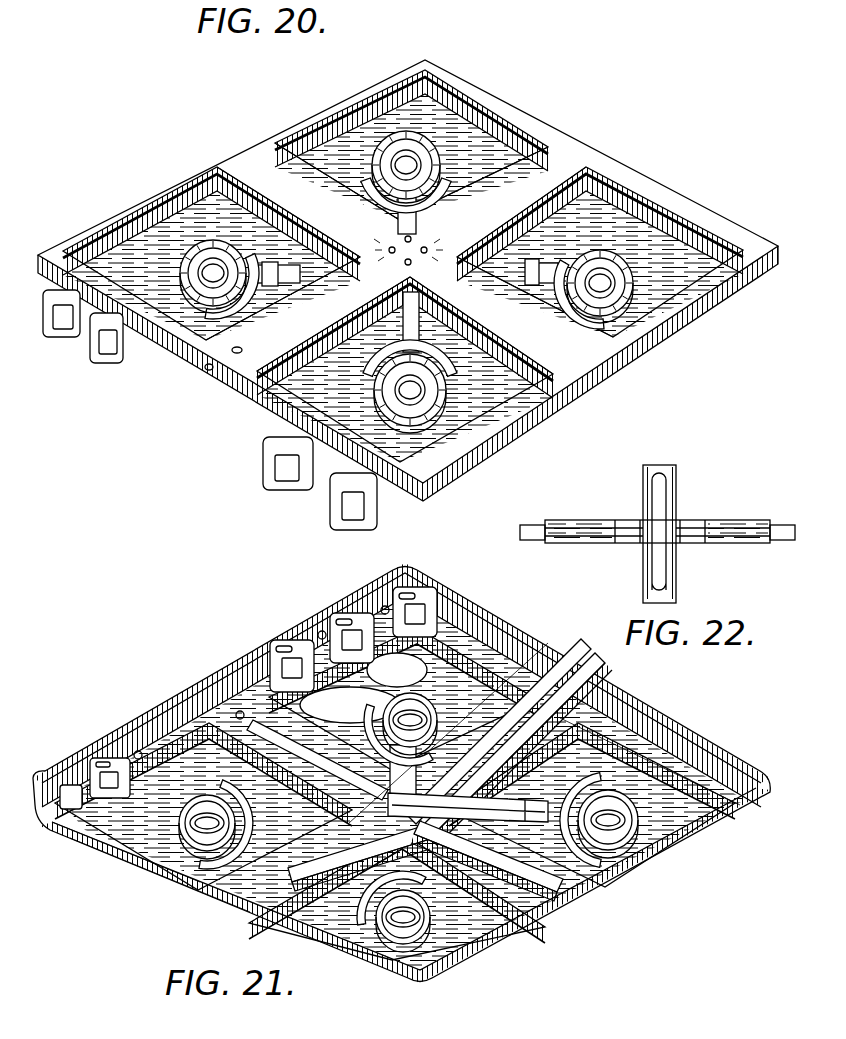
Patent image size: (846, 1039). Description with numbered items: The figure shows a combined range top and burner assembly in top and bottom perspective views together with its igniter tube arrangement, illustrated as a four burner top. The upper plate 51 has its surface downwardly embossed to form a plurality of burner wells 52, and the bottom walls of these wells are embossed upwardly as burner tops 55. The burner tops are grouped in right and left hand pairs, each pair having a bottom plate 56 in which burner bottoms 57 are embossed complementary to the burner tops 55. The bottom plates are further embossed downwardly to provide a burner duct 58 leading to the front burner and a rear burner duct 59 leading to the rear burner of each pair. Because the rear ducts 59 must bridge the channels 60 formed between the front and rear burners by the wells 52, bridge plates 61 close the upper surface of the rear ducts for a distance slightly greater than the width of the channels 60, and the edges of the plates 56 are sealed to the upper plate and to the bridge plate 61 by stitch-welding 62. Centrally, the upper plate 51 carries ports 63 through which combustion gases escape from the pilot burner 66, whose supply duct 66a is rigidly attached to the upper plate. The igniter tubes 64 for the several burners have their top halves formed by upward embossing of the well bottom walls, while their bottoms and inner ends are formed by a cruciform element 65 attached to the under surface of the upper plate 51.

In FIG. 20, the upper plate 51 is at (600, 161).
In FIG. 21, the upper plate 51 is at (355, 588).
In FIG. 20, the burner wells 52 is at (490, 149).
In FIG. 21, the burner wells 52 is at (687, 814).
In FIG. 20, the burner tops 55 is at (400, 150).
In FIG. 20, the bottom plate 56 is at (392, 510).
In FIG. 21, the bottom plate 56 is at (406, 599).
In FIG. 21, the burner bottoms 57 is at (490, 793).
In FIG. 21, the burner duct 58 is at (170, 799).
In FIG. 21, the rear burner duct 59 is at (133, 840).
In FIG. 21, the channels 60 is at (556, 707).
In FIG. 21, the bridge plates 61 is at (550, 717).
In FIG. 20, the stitch-welding 62 is at (284, 148).
In FIG. 21, the stitch-welding 62 is at (451, 700).
In FIG. 20, the ports 63 is at (437, 250).
In FIG. 20, the igniter tubes 64 is at (483, 213).
In FIG. 22, the cruciform element 65 is at (677, 573).
In FIG. 21, the cruciform element 65 is at (497, 770).
In FIG. 21, the pilot burner 66 is at (450, 862).
In FIG. 21, the supply duct 66a is at (263, 737).